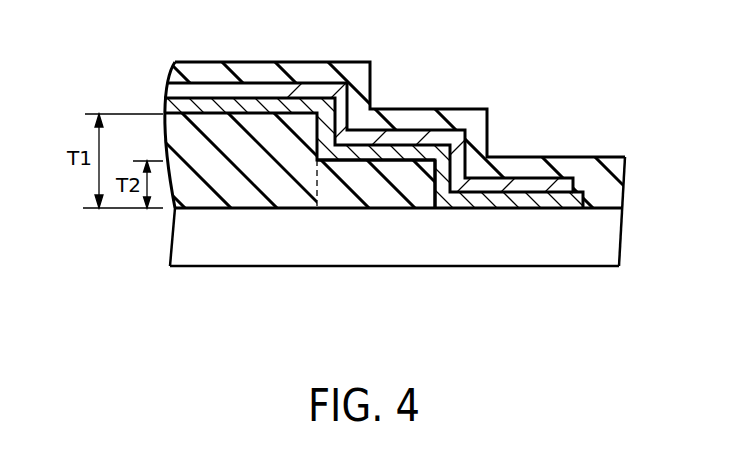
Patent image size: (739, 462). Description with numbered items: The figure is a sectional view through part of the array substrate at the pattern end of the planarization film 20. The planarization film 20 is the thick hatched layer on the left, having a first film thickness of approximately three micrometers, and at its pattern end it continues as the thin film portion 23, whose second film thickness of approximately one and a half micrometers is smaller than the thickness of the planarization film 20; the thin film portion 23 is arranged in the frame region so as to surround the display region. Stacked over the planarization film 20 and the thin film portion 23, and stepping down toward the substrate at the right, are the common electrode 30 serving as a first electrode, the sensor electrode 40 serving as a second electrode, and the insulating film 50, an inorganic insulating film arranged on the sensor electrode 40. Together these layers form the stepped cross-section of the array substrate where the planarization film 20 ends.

The planarization film 20 is at (255, 203).
The thin film portion 23 is at (368, 203).
The common electrode 30 is at (465, 203).
The sensor electrode 40 is at (513, 197).
The insulating film 50 is at (600, 200).